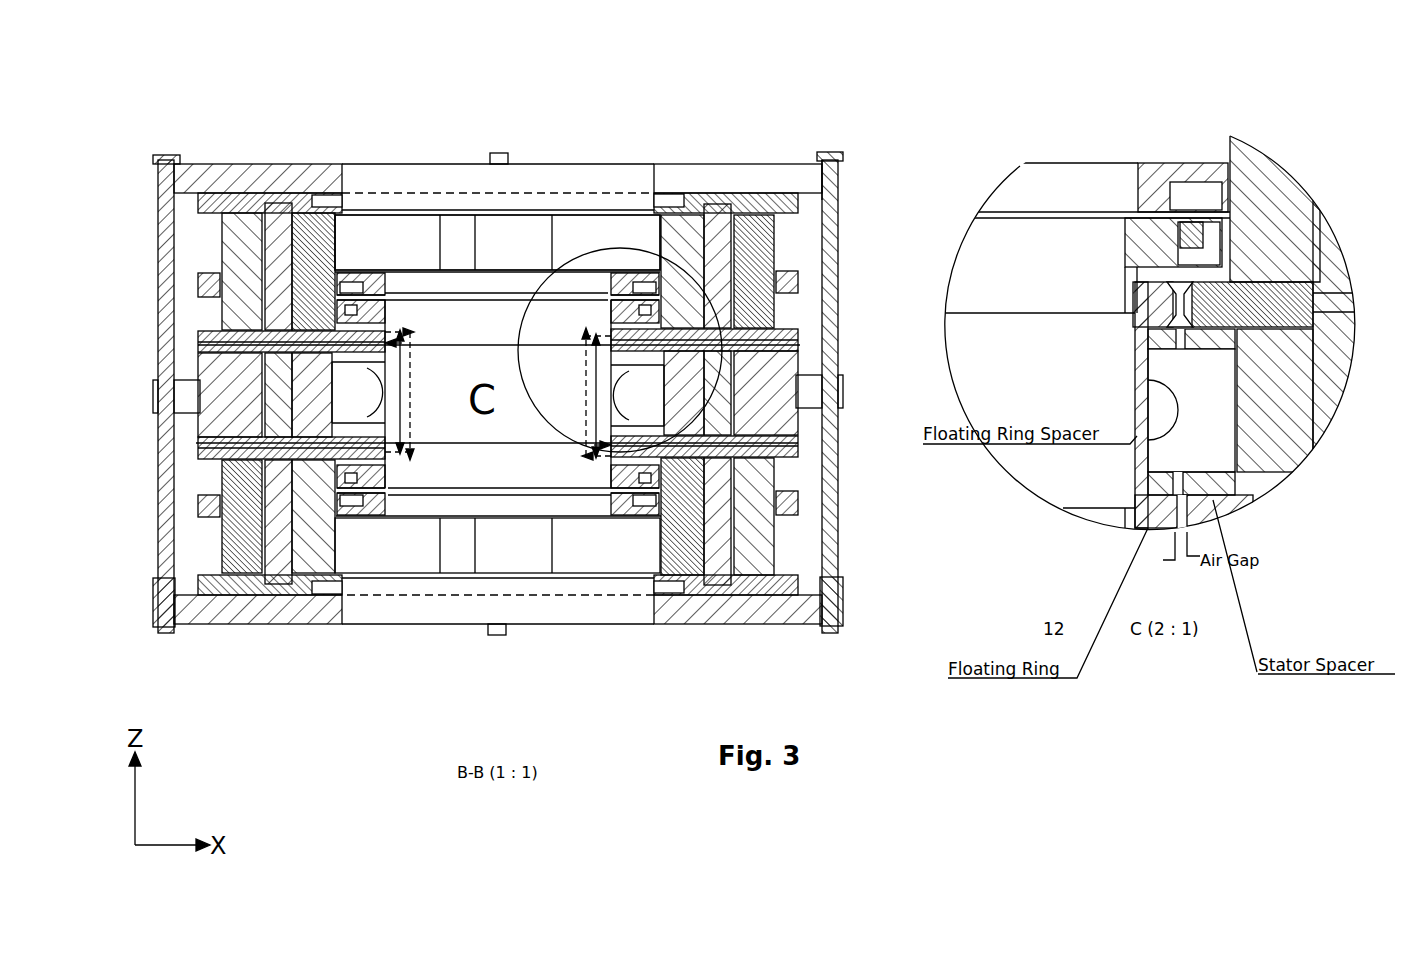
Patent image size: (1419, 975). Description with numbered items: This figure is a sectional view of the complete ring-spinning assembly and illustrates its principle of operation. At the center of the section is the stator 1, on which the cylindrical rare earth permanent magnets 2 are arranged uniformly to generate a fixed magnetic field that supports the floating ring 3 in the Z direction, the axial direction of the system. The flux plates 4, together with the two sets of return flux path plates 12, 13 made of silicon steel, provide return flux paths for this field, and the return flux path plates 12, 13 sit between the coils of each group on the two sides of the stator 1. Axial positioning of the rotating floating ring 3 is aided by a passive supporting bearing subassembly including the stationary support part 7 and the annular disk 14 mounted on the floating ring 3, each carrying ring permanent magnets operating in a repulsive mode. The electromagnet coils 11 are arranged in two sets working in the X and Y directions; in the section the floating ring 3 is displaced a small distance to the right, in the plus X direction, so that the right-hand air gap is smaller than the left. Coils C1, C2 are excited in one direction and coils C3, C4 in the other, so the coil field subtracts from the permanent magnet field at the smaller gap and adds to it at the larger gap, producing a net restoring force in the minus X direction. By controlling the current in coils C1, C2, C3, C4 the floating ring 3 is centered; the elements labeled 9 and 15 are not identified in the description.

The stator 1 is at (778, 388).
The permanent magnets 2 is at (770, 352).
The floating ring 3 is at (376, 490).
The flux plates 4 is at (207, 330).
The stationary support part 7 is at (370, 268).
The end plate 9 is at (826, 512).
The electromagnet coils 11 is at (822, 150).
The return flux path plates 12 is at (333, 598).
The return flux path plates 13 is at (228, 598).
The annular disk 14 is at (378, 296).
The housing 15 is at (758, 172).
The coil C1 is at (755, 272).
The coil C2 is at (752, 540).
The coil C3 is at (237, 538).
The coil C4 is at (237, 260).